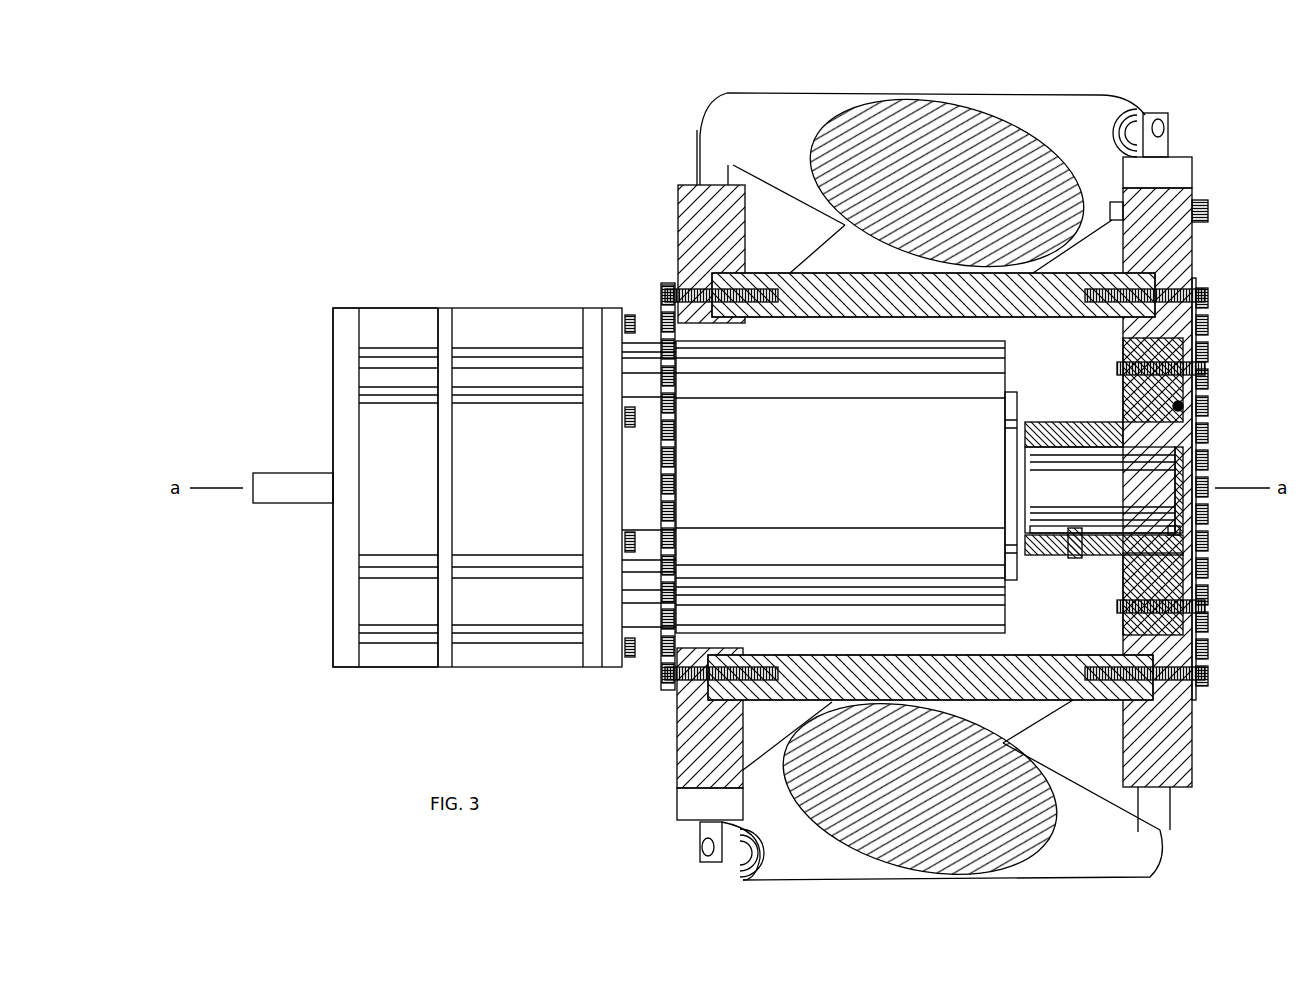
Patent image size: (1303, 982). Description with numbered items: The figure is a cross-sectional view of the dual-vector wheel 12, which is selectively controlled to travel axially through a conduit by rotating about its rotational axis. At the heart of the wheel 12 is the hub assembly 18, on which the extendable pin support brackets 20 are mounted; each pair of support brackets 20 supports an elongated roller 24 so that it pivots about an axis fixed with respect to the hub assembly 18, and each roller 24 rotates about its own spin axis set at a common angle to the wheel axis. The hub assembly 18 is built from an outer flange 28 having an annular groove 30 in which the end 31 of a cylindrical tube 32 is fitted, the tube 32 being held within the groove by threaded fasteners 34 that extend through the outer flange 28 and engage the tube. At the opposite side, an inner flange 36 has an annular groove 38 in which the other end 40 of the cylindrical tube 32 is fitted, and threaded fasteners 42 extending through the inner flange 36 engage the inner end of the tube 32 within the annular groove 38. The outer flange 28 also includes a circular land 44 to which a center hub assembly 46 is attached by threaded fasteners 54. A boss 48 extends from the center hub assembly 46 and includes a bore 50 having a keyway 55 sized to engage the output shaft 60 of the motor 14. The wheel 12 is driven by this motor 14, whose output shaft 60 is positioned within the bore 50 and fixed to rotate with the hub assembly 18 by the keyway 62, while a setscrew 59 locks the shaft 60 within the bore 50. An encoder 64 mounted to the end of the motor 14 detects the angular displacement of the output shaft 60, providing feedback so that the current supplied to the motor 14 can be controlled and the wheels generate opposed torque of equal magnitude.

The wheel 12 is at (776, 76).
The motor 14 is at (500, 307).
The hub assembly 18 is at (1170, 270).
The extendable pin support bracket 20 is at (697, 170).
The elongated roller 24 is at (742, 106).
The outer flange 28 is at (1178, 205).
The annular groove 30 is at (1136, 272).
The end of cylindrical tube 31 is at (1170, 282).
The cylindrical tube 32 is at (1062, 276).
The threaded fasteners 34 is at (1208, 292).
The inner flange 36 is at (678, 232).
The annular groove 38 is at (735, 705).
The other end of cylindrical tube 40 is at (680, 710).
The threaded fasteners 42 is at (662, 292).
The circular land 44 is at (1182, 408).
The center hub assembly 46 is at (1120, 590).
The boss 48 is at (1075, 422).
The bore 50 is at (1055, 532).
The threaded fasteners 54 is at (1208, 368).
The keyway 55 is at (1180, 531).
The setscrew 59 is at (1073, 560).
The output shaft 60 is at (1157, 485).
The keyway 62 is at (1113, 530).
The encoder 64 is at (392, 307).